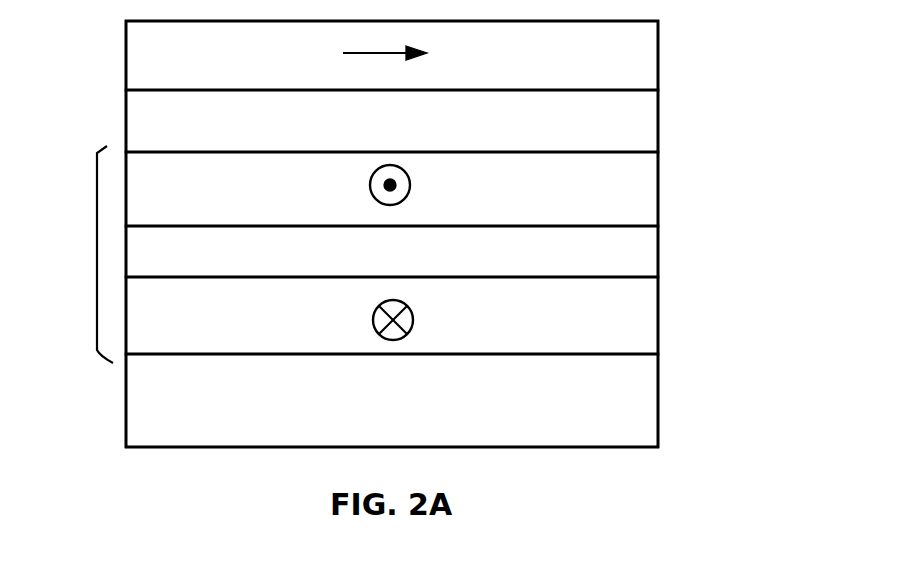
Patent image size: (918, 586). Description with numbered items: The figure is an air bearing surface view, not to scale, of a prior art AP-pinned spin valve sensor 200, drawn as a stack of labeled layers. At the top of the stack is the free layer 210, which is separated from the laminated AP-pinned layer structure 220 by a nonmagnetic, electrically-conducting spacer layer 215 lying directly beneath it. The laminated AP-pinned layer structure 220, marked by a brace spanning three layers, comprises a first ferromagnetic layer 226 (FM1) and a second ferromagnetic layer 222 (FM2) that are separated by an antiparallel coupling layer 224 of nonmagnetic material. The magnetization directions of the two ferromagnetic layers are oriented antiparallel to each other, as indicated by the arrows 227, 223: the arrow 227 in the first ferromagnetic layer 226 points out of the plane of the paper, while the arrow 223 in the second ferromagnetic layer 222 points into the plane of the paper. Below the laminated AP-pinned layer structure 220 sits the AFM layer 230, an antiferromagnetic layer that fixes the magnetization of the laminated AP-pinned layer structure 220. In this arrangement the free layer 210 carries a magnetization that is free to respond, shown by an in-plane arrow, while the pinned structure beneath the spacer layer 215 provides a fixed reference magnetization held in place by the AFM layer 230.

The AP-pinned SV sensor 200 is at (742, 486).
The free layer 210 is at (645, 68).
The spacer layer 215 is at (645, 127).
The laminated AP-pinned layer structure 220 is at (77, 254).
The second ferromagnetic layer 222 is at (641, 321).
The arrow 223 is at (413, 322).
The antiparallel coupling layer 224 is at (641, 258).
The first ferromagnetic layer 226 is at (645, 188).
The arrow 227 is at (410, 185).
The AFM layer 230 is at (643, 398).